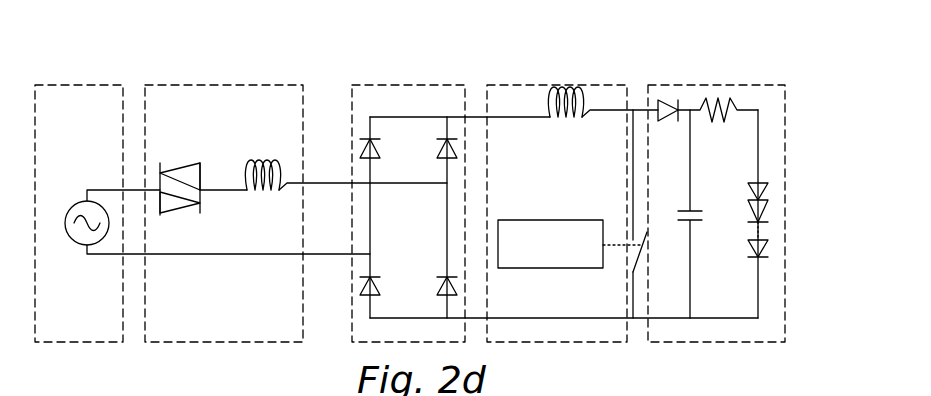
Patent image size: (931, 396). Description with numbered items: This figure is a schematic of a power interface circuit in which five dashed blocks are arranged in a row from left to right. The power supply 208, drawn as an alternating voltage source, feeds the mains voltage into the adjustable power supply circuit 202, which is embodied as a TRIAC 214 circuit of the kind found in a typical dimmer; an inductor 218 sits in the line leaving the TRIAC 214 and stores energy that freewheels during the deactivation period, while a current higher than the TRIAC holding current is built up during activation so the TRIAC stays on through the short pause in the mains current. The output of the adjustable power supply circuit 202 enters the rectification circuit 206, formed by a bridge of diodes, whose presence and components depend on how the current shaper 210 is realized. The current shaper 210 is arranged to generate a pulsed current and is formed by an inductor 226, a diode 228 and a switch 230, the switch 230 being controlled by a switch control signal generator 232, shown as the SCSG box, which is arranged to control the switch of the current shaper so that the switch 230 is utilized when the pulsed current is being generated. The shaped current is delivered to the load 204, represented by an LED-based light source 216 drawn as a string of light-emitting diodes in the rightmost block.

The adjustable power supply circuit 202 is at (200, 85).
The load 204 is at (755, 85).
The rectification circuit 206 is at (442, 85).
The power supply 208 is at (70, 85).
The current shaper 210 is at (525, 85).
The TRIAC 214 is at (173, 214).
The LED-based light source 216 is at (740, 232).
The inductor 218 is at (260, 161).
The inductor 226 is at (583, 100).
The diode 228 is at (673, 100).
The switch 230 is at (637, 236).
The switch control signal generator 232 is at (537, 220).